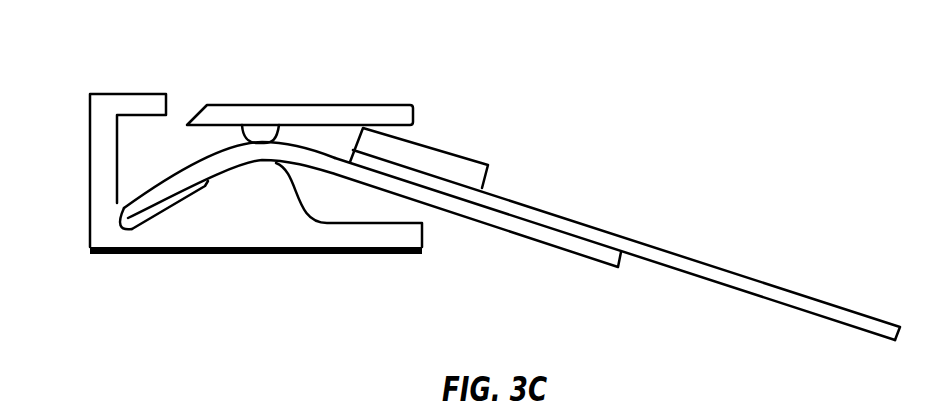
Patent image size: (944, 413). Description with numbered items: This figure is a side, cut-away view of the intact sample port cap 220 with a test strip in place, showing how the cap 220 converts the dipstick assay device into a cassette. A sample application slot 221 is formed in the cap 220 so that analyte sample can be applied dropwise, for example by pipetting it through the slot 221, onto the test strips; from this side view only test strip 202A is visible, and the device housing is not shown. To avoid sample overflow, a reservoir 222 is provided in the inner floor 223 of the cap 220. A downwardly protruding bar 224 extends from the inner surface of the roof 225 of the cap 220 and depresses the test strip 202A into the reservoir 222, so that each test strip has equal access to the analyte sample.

The cap 220 is at (83, 95).
The sample application slot 221 is at (190, 95).
The reservoir 222 is at (163, 157).
The inner floor 223 is at (353, 225).
The downwardly protruding bar 224 is at (262, 133).
The roof 225 is at (412, 105).
The test strip 202A is at (750, 275).